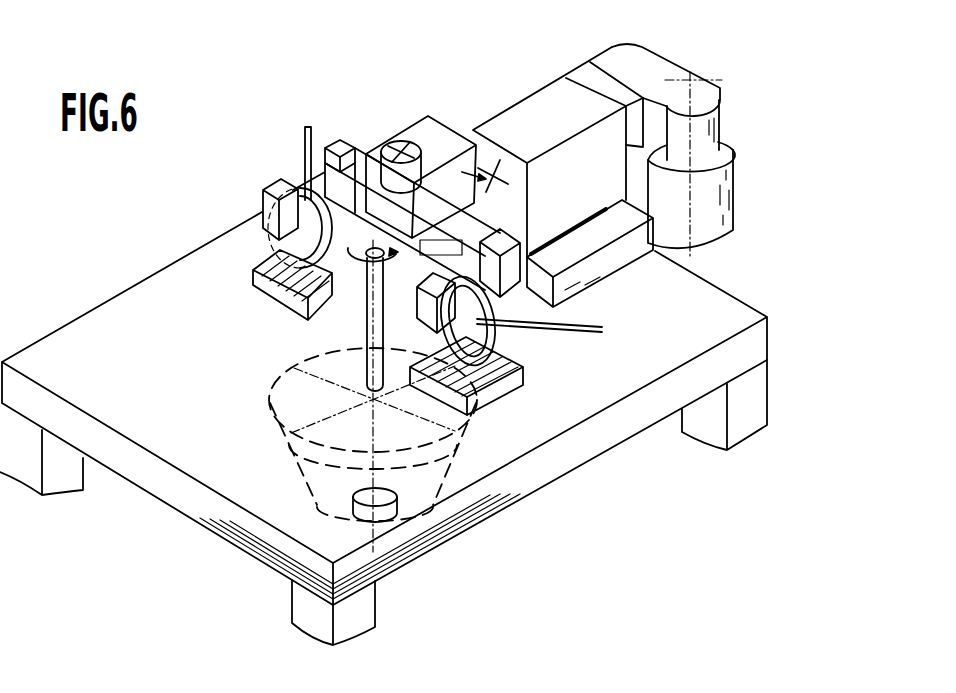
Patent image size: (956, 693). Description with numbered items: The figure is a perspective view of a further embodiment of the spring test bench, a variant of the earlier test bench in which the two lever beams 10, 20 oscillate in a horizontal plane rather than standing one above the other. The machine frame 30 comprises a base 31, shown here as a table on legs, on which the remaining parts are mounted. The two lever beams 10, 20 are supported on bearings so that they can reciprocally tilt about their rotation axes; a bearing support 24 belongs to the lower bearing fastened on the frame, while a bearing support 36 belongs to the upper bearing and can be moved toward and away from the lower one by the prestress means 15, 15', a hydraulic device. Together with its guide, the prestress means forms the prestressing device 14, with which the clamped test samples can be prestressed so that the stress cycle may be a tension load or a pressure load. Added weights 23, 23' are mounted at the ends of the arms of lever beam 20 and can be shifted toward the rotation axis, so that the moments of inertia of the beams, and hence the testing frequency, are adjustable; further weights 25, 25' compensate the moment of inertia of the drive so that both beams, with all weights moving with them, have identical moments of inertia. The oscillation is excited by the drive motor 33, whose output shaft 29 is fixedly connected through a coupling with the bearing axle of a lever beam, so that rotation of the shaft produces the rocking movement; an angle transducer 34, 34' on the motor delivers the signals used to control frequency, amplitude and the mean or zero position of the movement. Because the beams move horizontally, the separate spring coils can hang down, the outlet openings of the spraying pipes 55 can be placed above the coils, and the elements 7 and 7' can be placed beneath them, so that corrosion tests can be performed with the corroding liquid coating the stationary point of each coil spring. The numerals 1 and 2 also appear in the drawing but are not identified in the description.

The clamping jaw block 1 is at (273, 181).
The workpiece holder 2 is at (301, 181).
The collecting element beneath the spring coil 7 is at (476, 385).
The collecting element beneath the spring coil 7' is at (280, 290).
The lever beam 10 is at (442, 222).
The prestressing device 14 is at (700, 62).
The prestress means 15 is at (486, 130).
The prestress means 15' is at (720, 195).
The lever beam 20 is at (268, 247).
The added weight 23 is at (590, 261).
The added weight 23' is at (346, 126).
The bearing support 24 is at (290, 345).
The weight 25 is at (522, 299).
The weight 25' is at (332, 108).
The motor output shaft 29 is at (368, 389).
The machine frame 30 is at (765, 287).
The base 31 is at (748, 347).
The drive motor 33 is at (433, 480).
The angle transducer 34 is at (391, 541).
The angle transducer 34' is at (409, 130).
The bearing support 36 is at (473, 172).
The spraying pipe 55 is at (308, 126).